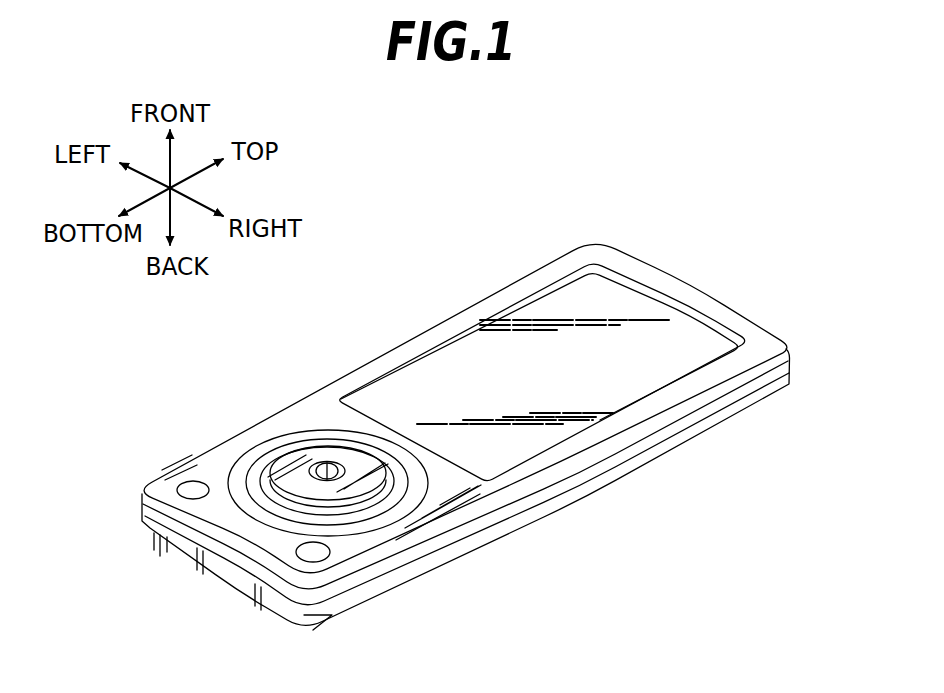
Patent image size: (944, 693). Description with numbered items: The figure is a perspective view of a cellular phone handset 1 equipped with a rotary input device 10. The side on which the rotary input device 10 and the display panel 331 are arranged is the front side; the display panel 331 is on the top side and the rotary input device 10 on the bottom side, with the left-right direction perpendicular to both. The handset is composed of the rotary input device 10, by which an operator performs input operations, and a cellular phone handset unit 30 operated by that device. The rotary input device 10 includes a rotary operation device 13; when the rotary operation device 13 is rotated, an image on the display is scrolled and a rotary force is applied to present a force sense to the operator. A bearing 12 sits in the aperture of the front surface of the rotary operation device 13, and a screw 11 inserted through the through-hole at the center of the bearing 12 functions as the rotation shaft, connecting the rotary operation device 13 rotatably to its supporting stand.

The cellular phone handset 1 is at (471, 231).
The rotary input device 10 is at (281, 444).
The screw 11 is at (319, 464).
The bearing 12 is at (339, 465).
The rotary operation device 13 is at (277, 463).
The cellular phone handset unit 30 is at (460, 319).
The display panel 331 is at (573, 302).